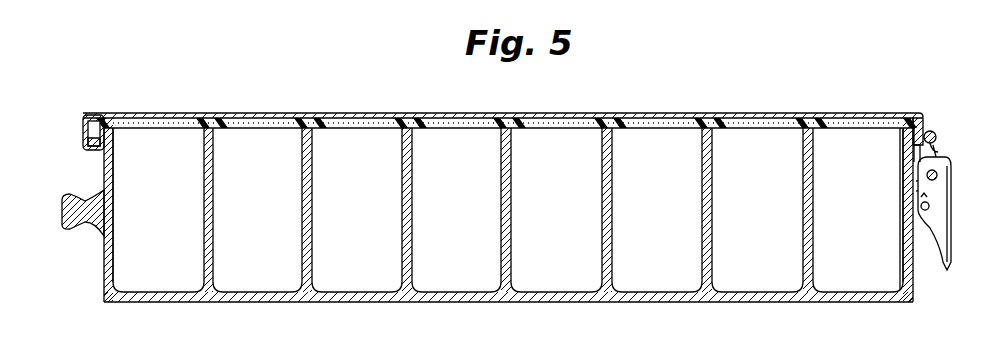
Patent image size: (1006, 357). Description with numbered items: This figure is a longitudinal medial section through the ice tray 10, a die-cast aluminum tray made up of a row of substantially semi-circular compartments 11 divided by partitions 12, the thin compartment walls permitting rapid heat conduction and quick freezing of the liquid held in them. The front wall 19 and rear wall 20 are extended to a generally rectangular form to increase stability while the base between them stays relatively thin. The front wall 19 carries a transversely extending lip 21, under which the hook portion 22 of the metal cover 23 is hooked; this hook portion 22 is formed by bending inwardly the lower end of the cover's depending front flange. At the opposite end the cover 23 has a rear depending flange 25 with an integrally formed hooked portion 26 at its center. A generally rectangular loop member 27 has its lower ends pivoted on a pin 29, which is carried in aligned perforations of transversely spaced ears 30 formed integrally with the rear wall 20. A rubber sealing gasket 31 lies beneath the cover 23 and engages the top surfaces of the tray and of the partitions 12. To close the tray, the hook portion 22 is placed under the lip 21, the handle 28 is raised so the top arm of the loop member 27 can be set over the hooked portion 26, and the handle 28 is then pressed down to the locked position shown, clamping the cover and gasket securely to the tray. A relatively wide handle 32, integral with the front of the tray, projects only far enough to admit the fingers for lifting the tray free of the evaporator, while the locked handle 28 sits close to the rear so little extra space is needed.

The ice tray 10 is at (496, 302).
The compartments 11 is at (574, 245).
The partitions 12 is at (501, 182).
The front wall 19 is at (104, 262).
The rear wall 20 is at (913, 268).
The lip 21 is at (86, 132).
The hook portion 22 is at (95, 150).
The cover 23 is at (352, 113).
The rear depending flange 25 is at (925, 120).
The hooked portion 26 is at (939, 152).
The loop member 27 is at (936, 134).
The handle 28 is at (951, 223).
The pin 29 is at (938, 176).
The ears 30 is at (915, 156).
The sealing gasket 31 is at (705, 125).
The handle 32 is at (65, 225).